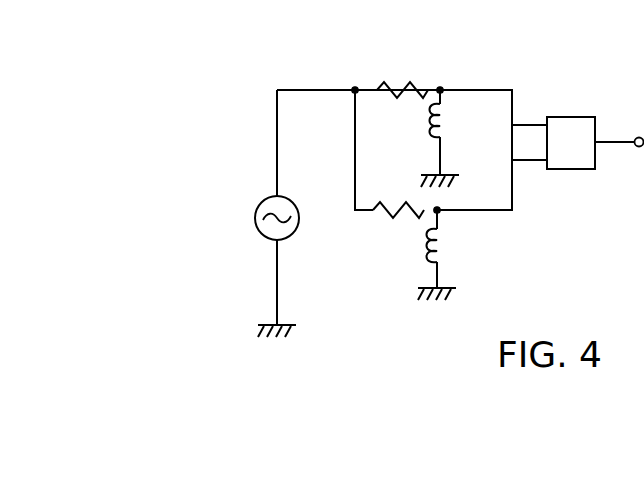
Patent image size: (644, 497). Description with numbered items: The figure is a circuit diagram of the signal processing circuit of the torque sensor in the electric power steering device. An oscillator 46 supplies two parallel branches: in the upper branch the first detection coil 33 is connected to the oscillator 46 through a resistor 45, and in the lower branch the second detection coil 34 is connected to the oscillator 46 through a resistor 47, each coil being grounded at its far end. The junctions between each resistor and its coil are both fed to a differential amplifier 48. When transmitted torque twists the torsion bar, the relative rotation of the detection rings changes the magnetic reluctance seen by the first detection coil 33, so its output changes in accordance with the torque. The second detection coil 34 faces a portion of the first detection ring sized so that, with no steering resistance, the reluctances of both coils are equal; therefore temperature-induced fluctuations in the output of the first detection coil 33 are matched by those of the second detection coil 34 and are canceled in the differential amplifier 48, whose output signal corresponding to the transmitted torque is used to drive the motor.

The first detection coil 33 is at (434, 136).
The second detection coil 34 is at (434, 261).
The resistor 45 is at (418, 78).
The oscillator 46 is at (255, 216).
The resistor 47 is at (385, 214).
The differential amplifier 48 is at (573, 162).